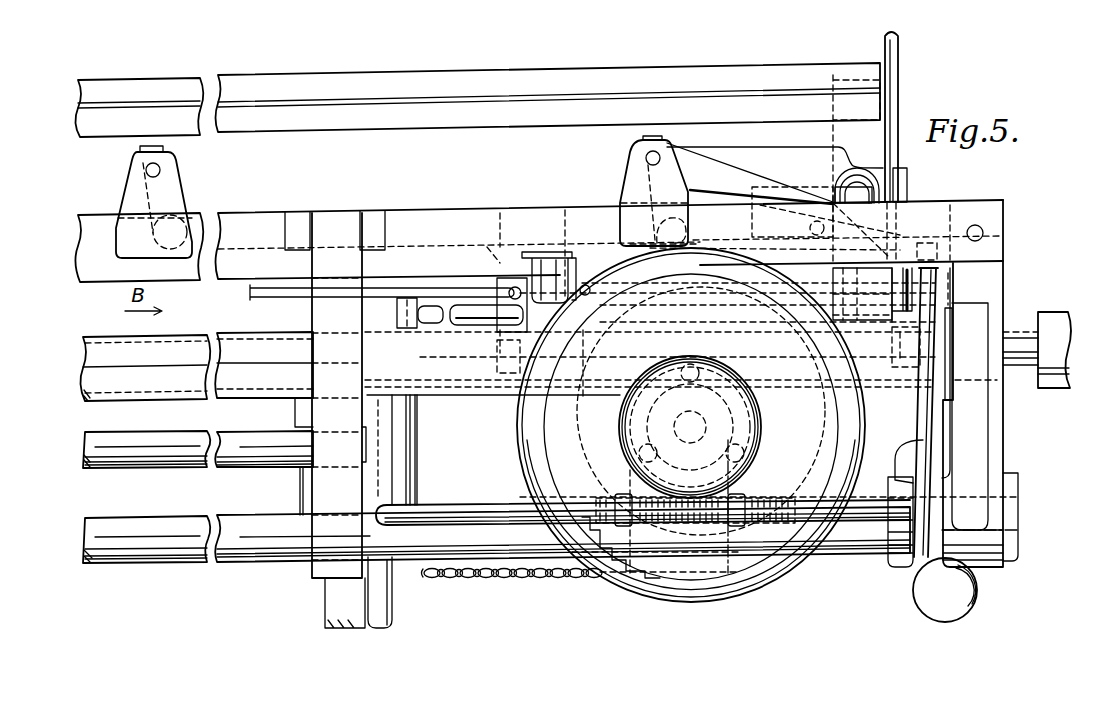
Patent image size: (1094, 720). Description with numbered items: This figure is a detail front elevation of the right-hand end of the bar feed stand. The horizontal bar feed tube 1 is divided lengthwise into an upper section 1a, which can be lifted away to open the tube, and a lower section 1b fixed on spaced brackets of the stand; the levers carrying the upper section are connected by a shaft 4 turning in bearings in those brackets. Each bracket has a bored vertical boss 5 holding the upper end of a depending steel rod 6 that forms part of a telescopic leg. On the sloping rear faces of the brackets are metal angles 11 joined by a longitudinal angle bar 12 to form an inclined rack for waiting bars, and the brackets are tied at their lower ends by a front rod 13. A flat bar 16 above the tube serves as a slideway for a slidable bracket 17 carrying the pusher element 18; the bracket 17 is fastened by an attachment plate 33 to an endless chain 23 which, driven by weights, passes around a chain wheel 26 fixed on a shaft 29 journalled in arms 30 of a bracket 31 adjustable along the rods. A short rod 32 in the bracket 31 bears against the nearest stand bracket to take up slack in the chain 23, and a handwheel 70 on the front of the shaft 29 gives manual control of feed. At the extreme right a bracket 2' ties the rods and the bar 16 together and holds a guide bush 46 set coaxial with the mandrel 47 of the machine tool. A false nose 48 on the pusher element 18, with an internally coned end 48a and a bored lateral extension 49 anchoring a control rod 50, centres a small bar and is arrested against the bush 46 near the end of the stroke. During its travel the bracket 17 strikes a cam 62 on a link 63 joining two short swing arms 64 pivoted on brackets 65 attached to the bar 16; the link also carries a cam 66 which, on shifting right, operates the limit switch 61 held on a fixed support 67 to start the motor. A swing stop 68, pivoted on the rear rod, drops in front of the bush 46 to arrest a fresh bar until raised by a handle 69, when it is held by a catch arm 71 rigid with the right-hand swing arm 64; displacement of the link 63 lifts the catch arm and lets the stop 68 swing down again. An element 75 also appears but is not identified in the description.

The bar feed tube 1 is at (90, 345).
The upper tube section 1a is at (258, 335).
The lower tube section 1b is at (280, 390).
The end bracket 2' is at (987, 383).
The shaft 4 is at (261, 458).
The vertical boss 5 is at (410, 449).
The depending steel rod 6 is at (394, 605).
The metal angles 11 is at (832, 131).
The angle bar 12 is at (436, 77).
The front rod 13 is at (276, 562).
The guide bar 16 is at (420, 212).
The slidable bracket 17 is at (577, 266).
The pusher element 18 is at (605, 374).
The endless chain 23 is at (510, 582).
The chain wheel 26 is at (598, 583).
The shaft 29 is at (758, 436).
The arms 30 is at (625, 489).
The bracket 31 is at (758, 577).
The short rod 32 is at (465, 510).
The attachment plate 33 is at (500, 275).
The guide bush 46 is at (958, 328).
The mandrel 47 is at (1045, 312).
The false nose 48 is at (905, 368).
The internally coned leading end 48a is at (913, 395).
The bored lateral extension 49 is at (860, 293).
The control rod 50 is at (500, 318).
The limit switch 61 is at (846, 172).
The cam 62 is at (502, 213).
The link 63 is at (285, 212).
The swing arms 64 is at (178, 178).
The brackets 65 is at (120, 192).
The cam 66 is at (836, 190).
The fixed support 67 is at (908, 181).
The swing stop 68 is at (940, 305).
The handle 69 is at (925, 590).
The handwheel 70 is at (808, 556).
The catch arm 71 is at (742, 172).
The cup 75 is at (548, 253).